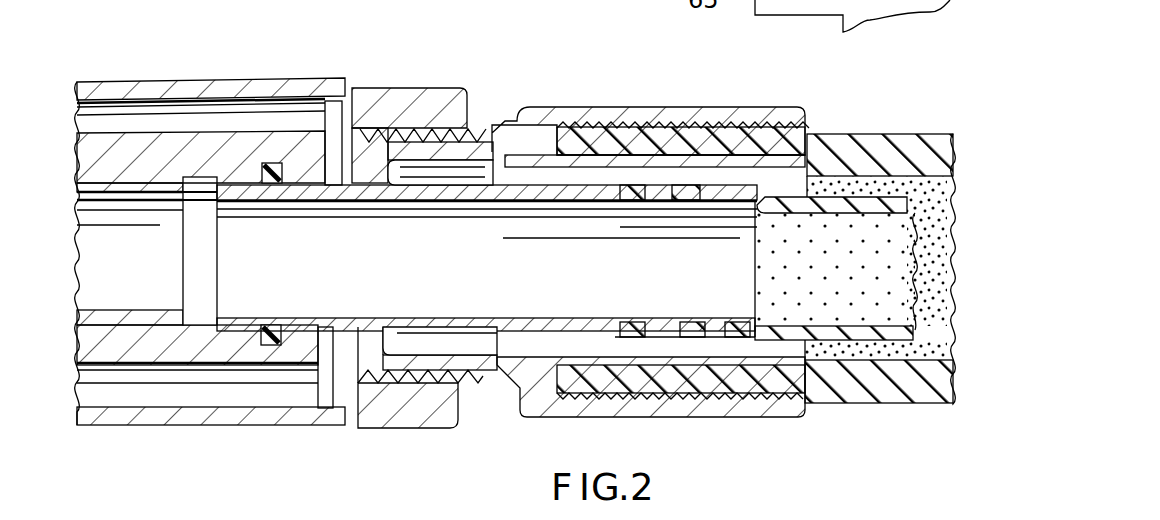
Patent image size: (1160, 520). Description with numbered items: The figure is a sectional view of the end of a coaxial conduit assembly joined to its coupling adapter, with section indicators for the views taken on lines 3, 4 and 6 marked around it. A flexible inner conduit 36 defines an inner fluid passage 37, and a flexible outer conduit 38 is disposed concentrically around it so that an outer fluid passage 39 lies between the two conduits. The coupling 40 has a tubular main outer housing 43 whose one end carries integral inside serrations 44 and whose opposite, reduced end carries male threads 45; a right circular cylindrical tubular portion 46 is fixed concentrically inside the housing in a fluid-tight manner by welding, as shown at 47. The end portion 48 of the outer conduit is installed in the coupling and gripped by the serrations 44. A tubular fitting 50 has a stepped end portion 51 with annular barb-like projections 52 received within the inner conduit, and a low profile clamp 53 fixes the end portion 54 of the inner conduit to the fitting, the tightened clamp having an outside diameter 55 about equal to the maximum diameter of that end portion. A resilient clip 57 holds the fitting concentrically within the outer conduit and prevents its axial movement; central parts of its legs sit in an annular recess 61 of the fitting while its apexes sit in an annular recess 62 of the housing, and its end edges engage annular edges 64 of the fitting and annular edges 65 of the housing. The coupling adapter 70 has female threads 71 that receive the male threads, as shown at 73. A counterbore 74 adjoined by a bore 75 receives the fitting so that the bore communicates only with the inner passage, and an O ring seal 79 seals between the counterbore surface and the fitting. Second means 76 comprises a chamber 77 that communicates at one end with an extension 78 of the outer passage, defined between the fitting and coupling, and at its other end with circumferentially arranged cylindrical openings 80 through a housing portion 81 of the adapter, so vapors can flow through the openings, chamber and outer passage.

The flexible inner conduit 36 is at (893, 338).
The inner fluid passage 37 is at (860, 315).
The flexible outer conduit 38 is at (922, 134).
The outer fluid passage 39 is at (853, 180).
The coupling 40 is at (560, 103).
The main outer housing 43 is at (580, 117).
The serrations 44 is at (682, 182).
The male threads 45 is at (430, 170).
The tubular portion 46 is at (727, 160).
The weld 47 is at (527, 132).
The end portion of outer conduit 48 is at (620, 337).
The fitting 50 is at (353, 108).
The stepped end portion 51 is at (737, 210).
The barb-like projections 52 is at (730, 338).
The low profile clamp 53 is at (673, 338).
The end portion of inner conduit 54 is at (622, 337).
The outside diameter of clamp 55 is at (702, 188).
The clip 57 is at (418, 322).
The annular recess in fitting 61 is at (460, 333).
The annular recess in housing 62 is at (405, 150).
The annular edges of fitting 64 is at (395, 201).
The annular edges of housing 65 is at (423, 167).
The coupling adapter 70 is at (245, 80).
The female threads 71 is at (372, 342).
The threaded connection 73 is at (468, 392).
The counterbore 74 is at (212, 183).
The bore 75 is at (110, 307).
The second means 76 is at (343, 383).
The chamber 77 is at (355, 353).
The extension of outer passage 78 is at (628, 155).
The O ring seal 79 is at (280, 325).
The cylindrical openings 80 is at (128, 407).
The housing portion 81 is at (110, 82).
The section line 3 is at (505, 112).
The section line 4 is at (906, 115).
The section line 6 is at (205, 72).